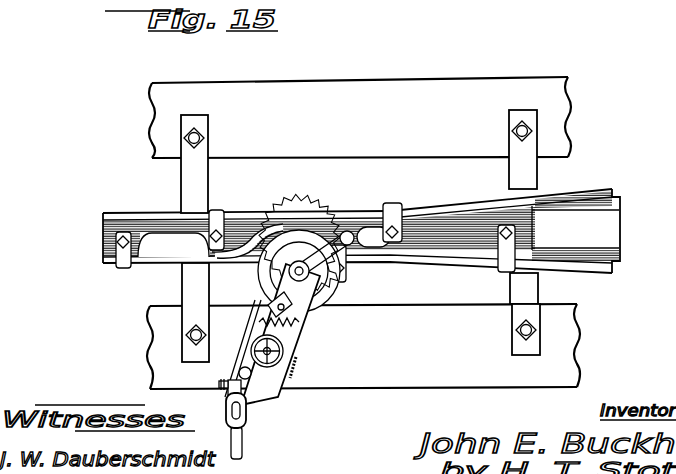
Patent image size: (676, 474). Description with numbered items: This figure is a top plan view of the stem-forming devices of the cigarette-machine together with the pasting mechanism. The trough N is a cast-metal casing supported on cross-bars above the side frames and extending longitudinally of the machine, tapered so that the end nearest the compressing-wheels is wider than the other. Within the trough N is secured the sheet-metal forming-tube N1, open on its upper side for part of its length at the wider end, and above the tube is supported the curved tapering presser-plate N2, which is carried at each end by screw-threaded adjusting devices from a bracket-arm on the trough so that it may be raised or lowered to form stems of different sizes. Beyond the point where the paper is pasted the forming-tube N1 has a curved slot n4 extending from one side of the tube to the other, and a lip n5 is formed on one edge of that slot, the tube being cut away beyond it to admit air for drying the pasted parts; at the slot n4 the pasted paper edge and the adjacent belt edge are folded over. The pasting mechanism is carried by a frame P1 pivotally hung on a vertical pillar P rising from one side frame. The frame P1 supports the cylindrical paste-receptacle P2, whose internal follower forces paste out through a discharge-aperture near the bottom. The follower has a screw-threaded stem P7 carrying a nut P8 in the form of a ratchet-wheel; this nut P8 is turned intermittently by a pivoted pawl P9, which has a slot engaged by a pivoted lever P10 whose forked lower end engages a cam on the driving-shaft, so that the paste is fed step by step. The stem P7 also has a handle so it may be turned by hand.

The beam A is at (360, 117).
The trough N is at (308, 214).
The forming-tube N1 is at (419, 252).
The presser-plate N2 is at (453, 227).
The curved slot n4 is at (233, 223).
The lip n5 is at (207, 248).
The pillar P is at (297, 371).
The frame P1 is at (283, 395).
The paste-receptacle P2 is at (318, 317).
The screw-threaded stem P7 is at (303, 272).
The nut P8 is at (317, 303).
The pawl P9 is at (262, 343).
The lever P10 is at (229, 413).